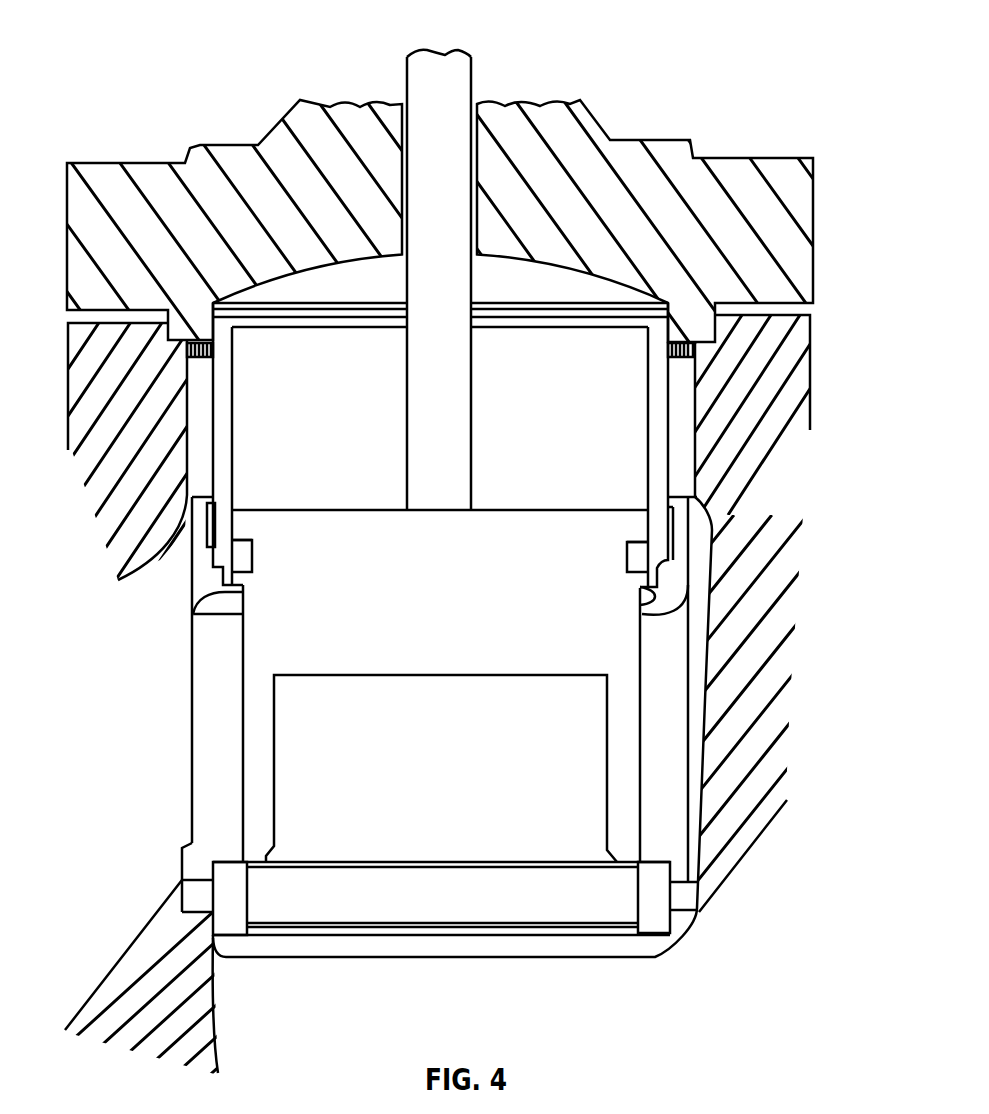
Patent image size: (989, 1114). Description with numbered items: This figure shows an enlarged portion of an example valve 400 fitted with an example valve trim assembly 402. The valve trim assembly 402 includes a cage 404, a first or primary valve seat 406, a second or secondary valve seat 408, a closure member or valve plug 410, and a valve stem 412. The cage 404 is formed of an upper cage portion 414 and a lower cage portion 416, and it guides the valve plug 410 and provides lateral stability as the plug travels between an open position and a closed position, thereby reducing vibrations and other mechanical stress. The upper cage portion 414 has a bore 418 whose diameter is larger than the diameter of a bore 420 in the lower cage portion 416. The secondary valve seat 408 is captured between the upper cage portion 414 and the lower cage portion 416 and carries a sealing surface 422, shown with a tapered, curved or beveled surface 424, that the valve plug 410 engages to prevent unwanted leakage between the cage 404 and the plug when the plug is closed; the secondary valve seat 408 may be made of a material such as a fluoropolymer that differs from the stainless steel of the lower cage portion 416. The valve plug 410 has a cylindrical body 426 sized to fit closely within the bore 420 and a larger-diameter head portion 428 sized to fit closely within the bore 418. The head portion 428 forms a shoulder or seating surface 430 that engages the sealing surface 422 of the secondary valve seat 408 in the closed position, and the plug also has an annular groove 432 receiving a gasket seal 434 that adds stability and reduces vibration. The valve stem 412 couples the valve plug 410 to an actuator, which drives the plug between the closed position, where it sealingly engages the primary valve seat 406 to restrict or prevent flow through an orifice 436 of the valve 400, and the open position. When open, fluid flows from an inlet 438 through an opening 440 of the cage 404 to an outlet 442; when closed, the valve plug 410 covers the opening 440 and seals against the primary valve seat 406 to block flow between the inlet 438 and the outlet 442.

The valve 400 is at (179, 91).
The valve trim assembly 402 is at (440, 445).
The cage 404 is at (382, 704).
The primary valve seat 406 is at (230, 912).
The secondary valve seat 408 is at (200, 573).
The valve plug 410 is at (477, 508).
The valve stem 412 is at (473, 77).
The upper cage portion 414 is at (215, 442).
The lower cage portion 416 is at (217, 759).
The bore 418 is at (232, 462).
The bore 420 is at (238, 713).
The sealing surface 422 is at (194, 610).
The beveled surface 424 is at (687, 608).
The cylindrical body 426 is at (277, 782).
The head portion 428 is at (635, 530).
The seating surface 430 is at (644, 587).
The annular groove 432 is at (252, 557).
The gasket seal 434 is at (240, 550).
The orifice 436 is at (448, 895).
The inlet 438 is at (105, 963).
The opening 440 is at (225, 803).
The outlet 442 is at (727, 908).